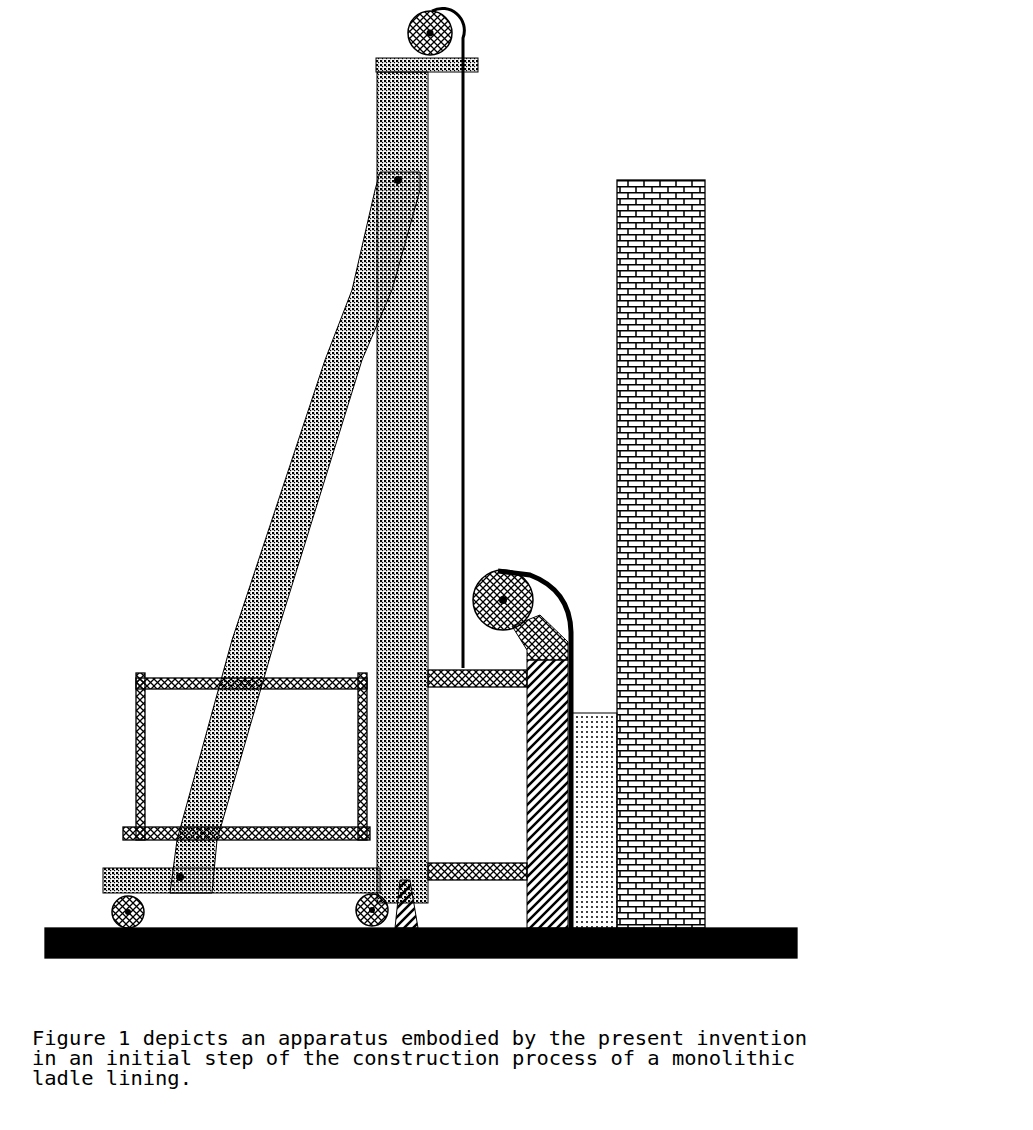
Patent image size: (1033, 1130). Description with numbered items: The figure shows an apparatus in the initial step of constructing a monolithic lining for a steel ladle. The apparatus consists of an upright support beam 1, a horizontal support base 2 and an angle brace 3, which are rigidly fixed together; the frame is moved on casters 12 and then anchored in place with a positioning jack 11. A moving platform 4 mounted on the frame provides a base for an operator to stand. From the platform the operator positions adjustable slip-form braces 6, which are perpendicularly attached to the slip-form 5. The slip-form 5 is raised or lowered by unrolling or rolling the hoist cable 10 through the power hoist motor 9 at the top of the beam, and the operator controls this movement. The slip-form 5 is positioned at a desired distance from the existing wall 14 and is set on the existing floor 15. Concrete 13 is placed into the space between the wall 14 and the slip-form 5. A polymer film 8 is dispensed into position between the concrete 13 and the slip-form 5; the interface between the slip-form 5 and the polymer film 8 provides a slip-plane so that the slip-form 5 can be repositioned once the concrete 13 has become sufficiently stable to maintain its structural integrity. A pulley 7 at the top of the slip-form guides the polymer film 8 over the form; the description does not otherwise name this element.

The upright support beam 1 is at (415, 480).
The horizontal support base 2 is at (241, 900).
The angle brace 3 is at (295, 532).
The moving platform 4 is at (246, 756).
The slip-form 5 is at (536, 771).
The adjustable slip-form braces 6 is at (480, 688).
The pulley 7 is at (503, 580).
The polymer film 8 is at (542, 748).
The power hoist motor 9 is at (416, 33).
The hoist cable 10 is at (468, 338).
The positioning jack 11 is at (418, 912).
The casters 12 is at (230, 912).
The concrete 13 is at (594, 805).
The existing wall 14 is at (683, 554).
The existing floor 15 is at (421, 924).